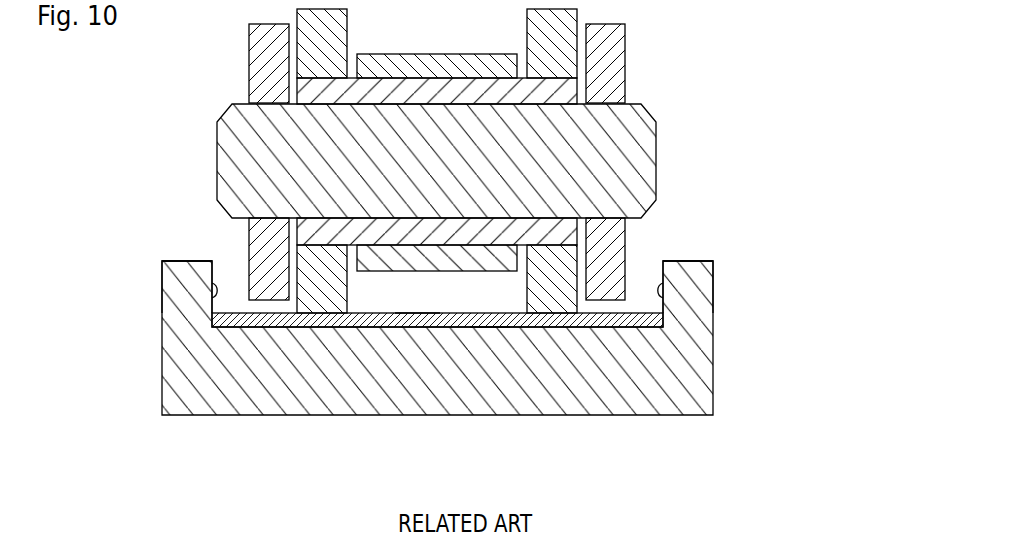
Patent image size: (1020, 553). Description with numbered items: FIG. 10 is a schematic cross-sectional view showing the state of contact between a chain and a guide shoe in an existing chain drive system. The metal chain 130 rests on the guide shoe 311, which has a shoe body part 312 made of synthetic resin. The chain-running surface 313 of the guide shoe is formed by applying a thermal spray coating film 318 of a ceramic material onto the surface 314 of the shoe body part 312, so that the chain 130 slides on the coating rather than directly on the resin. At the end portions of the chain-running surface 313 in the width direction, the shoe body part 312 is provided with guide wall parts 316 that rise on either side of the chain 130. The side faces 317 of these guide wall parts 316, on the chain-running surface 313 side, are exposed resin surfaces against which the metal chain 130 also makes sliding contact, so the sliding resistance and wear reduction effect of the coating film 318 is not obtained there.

The chain 130 is at (640, 33).
The guide shoe 311 is at (155, 258).
The shoe body part 312 is at (686, 363).
The chain-running surface 313 is at (418, 323).
The surface 314 is at (488, 327).
The guide wall parts 316 is at (187, 268).
The side faces 317 is at (212, 292).
The thermal spray coating film 318 is at (270, 322).